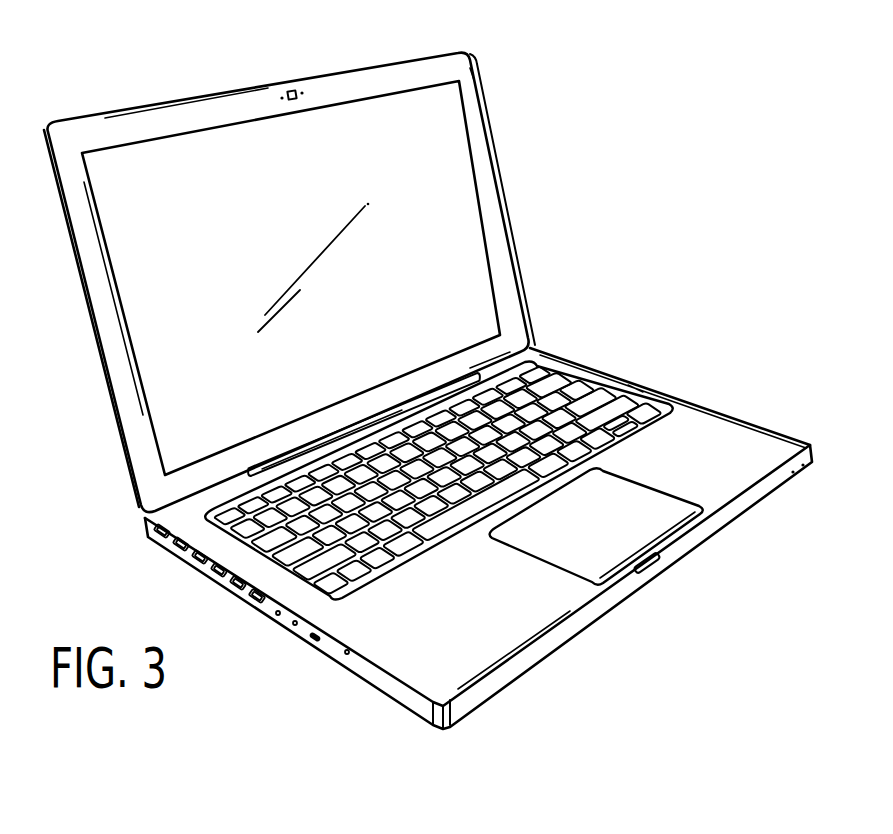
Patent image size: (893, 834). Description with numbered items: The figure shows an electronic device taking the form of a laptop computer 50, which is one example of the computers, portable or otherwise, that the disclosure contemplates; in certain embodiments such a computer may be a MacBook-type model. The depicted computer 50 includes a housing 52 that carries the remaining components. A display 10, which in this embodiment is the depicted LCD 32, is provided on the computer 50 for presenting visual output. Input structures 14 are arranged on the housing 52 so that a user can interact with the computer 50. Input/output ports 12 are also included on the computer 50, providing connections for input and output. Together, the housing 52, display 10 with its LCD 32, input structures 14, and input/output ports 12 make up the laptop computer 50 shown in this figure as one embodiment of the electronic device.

The laptop computer 50 is at (199, 61).
The display 10 is at (467, 220).
The LCD 32 is at (452, 110).
The housing 52 is at (673, 398).
The input/output ports 12 is at (237, 590).
The input structures 14 is at (595, 395).